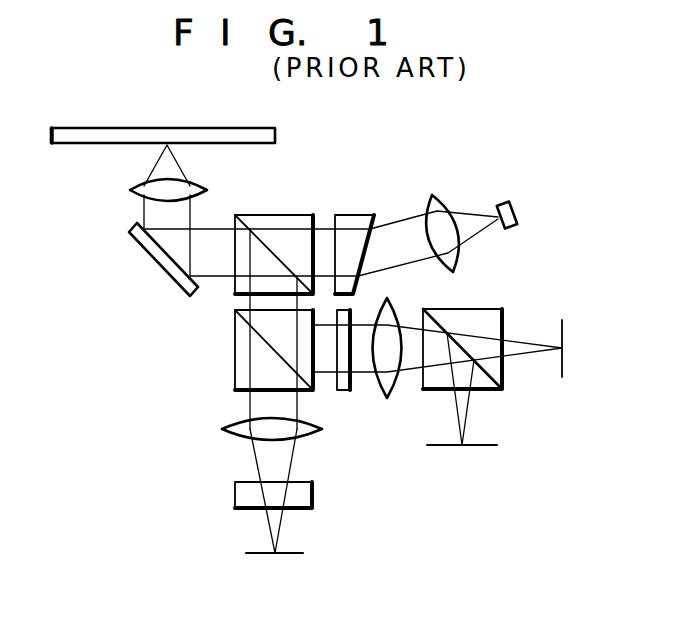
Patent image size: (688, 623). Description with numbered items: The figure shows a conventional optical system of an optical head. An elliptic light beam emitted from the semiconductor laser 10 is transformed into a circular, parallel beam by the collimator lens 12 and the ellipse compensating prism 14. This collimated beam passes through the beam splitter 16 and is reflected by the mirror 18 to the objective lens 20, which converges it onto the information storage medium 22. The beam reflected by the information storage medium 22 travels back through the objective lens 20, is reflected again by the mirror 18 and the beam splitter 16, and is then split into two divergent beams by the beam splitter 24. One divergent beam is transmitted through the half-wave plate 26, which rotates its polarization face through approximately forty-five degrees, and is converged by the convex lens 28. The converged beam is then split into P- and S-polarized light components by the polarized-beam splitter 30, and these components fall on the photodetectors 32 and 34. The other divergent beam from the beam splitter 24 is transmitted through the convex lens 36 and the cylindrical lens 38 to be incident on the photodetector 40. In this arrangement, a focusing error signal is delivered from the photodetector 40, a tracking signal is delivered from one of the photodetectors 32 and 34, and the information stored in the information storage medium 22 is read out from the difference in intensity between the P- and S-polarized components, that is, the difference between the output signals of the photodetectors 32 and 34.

The semiconductor laser 10 is at (504, 200).
The collimator lens 12 is at (440, 192).
The ellipse compensating prism 14 is at (348, 220).
The beam splitter 16 is at (277, 220).
The mirror 18 is at (152, 256).
The objective lens 20 is at (130, 190).
The information storage medium 22 is at (231, 133).
The beam splitter 24 is at (235, 345).
The half-wave plate 26 is at (344, 392).
The convex lens 28 is at (392, 392).
The polarized-beam splitter 30 is at (474, 308).
The photodetector 32 is at (566, 331).
The photodetector 34 is at (488, 447).
The convex lens 36 is at (235, 425).
The cylindrical lens 38 is at (235, 488).
The photodetector 40 is at (253, 557).